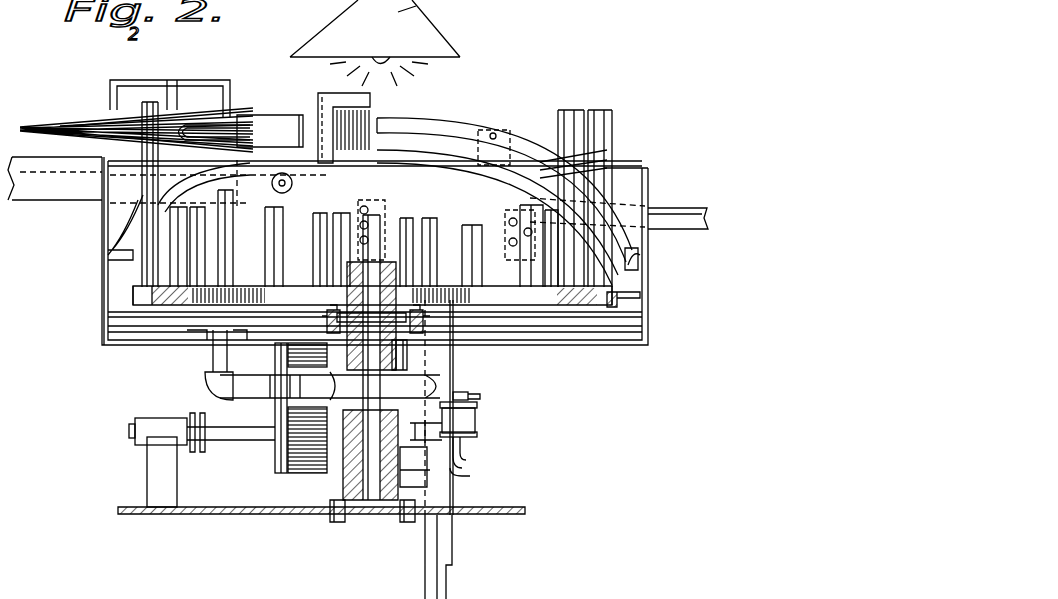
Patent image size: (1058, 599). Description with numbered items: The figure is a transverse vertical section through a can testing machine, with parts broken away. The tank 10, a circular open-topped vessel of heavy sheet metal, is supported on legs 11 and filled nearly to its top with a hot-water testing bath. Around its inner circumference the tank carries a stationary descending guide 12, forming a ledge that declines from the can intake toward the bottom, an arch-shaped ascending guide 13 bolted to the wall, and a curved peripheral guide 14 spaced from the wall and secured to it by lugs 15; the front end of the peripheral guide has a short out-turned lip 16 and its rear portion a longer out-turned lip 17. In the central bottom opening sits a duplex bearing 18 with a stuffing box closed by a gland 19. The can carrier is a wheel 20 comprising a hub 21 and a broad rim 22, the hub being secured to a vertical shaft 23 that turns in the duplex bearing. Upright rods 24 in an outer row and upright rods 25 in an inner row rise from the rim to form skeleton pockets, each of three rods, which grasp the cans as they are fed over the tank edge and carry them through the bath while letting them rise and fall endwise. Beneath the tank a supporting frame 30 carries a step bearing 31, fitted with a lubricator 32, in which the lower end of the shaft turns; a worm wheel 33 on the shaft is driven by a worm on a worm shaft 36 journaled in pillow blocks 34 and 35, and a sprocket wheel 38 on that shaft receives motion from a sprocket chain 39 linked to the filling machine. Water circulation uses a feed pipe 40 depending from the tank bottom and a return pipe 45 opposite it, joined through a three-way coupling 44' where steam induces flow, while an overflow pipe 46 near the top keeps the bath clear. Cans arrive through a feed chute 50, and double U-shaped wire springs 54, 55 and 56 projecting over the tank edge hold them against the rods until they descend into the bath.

The tank 10 is at (652, 250).
The legs 11 is at (440, 588).
The descending guide 12 is at (120, 233).
The ascending guide 13 is at (642, 292).
The peripheral guide 14 is at (250, 106).
The lugs 15 is at (490, 148).
The out-turned lip 16 is at (294, 115).
The out-turned lip 17 is at (380, 122).
The duplex bearing 18 is at (430, 330).
The gland 19 is at (410, 352).
The wheel 20 is at (535, 305).
The hub 21 is at (330, 286).
The rim 22 is at (133, 297).
The vertical shaft 23 is at (372, 258).
The upright rods 24 is at (612, 108).
The upright rods 25 is at (575, 135).
The supporting frame 30 is at (530, 511).
The step bearing 31 is at (343, 490).
The lubricator 32 is at (473, 428).
The worm wheel 33 is at (477, 420).
The pillow block 34 is at (466, 465).
The pillow block 35 is at (160, 428).
The worm shaft 36 is at (238, 440).
The sprocket wheel 38 is at (278, 470).
The sprocket chain 39 is at (275, 408).
The feed pipe 40 is at (213, 355).
The three-way coupling 44' is at (330, 370).
The return pipe 45 is at (480, 396).
The overflow pipe 46 is at (281, 172).
The feed chute 50 is at (55, 178).
The wire spring 54 is at (108, 102).
The wire spring 55 is at (78, 122).
The wire spring 56 is at (38, 122).